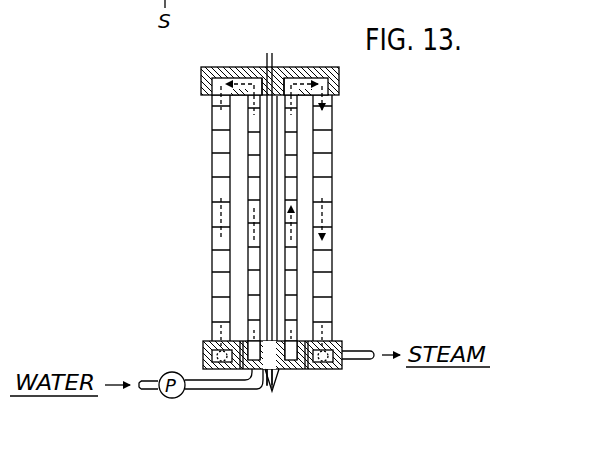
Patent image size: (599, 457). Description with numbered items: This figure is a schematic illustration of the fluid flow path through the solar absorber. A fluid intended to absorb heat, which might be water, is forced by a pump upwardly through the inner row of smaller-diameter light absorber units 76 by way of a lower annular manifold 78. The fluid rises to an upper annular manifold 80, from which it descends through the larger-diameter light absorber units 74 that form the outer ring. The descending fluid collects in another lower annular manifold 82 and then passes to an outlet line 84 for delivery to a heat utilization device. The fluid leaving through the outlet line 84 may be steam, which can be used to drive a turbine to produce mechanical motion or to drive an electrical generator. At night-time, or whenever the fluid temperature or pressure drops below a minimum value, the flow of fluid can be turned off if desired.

The outer light absorber unit 74 is at (212, 258).
The inner light absorber unit 76 is at (255, 167).
The lower annular manifold 78 is at (274, 393).
The upper annular manifold 80 is at (292, 72).
The lower annular manifold 82 is at (207, 351).
The outlet line 84 is at (357, 359).